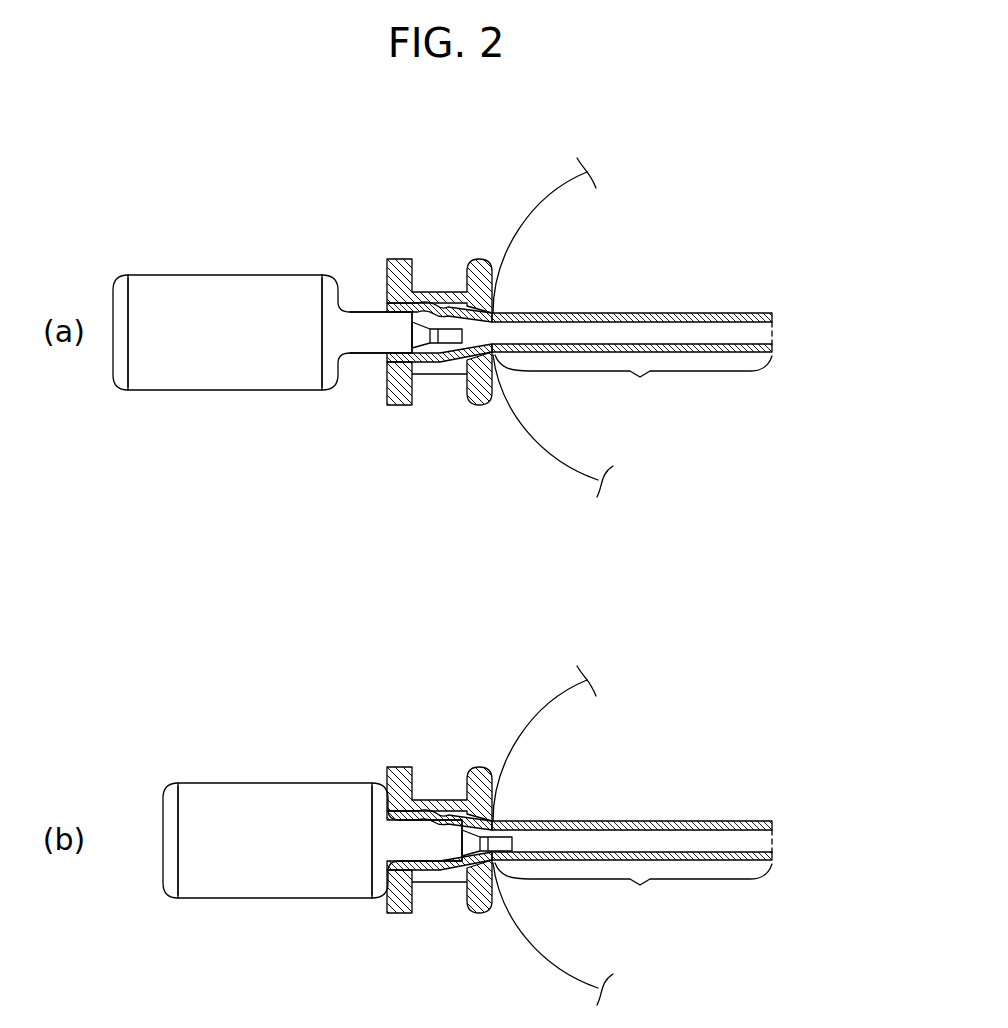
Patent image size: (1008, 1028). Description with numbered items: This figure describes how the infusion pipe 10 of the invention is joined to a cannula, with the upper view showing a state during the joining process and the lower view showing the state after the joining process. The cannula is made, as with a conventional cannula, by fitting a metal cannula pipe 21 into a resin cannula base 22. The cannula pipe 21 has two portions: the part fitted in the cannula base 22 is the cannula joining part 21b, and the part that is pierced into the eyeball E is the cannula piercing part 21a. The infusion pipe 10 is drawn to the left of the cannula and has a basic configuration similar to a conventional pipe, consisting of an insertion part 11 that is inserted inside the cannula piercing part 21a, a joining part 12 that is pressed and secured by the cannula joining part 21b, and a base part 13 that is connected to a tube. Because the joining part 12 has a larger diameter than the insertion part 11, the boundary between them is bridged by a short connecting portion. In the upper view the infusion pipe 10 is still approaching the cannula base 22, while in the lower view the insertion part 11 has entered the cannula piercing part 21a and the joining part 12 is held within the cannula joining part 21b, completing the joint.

The infusion pipe 10 is at (234, 256).
The insertion part 11 is at (437, 342).
The joining part 12 is at (372, 328).
The base part 13 is at (178, 305).
The cannula pipe 21 is at (642, 313).
The cannula piercing part 21a is at (633, 631).
The cannula joining part 21b is at (432, 304).
The cannula base 22 is at (480, 394).
The eyeball E is at (537, 208).